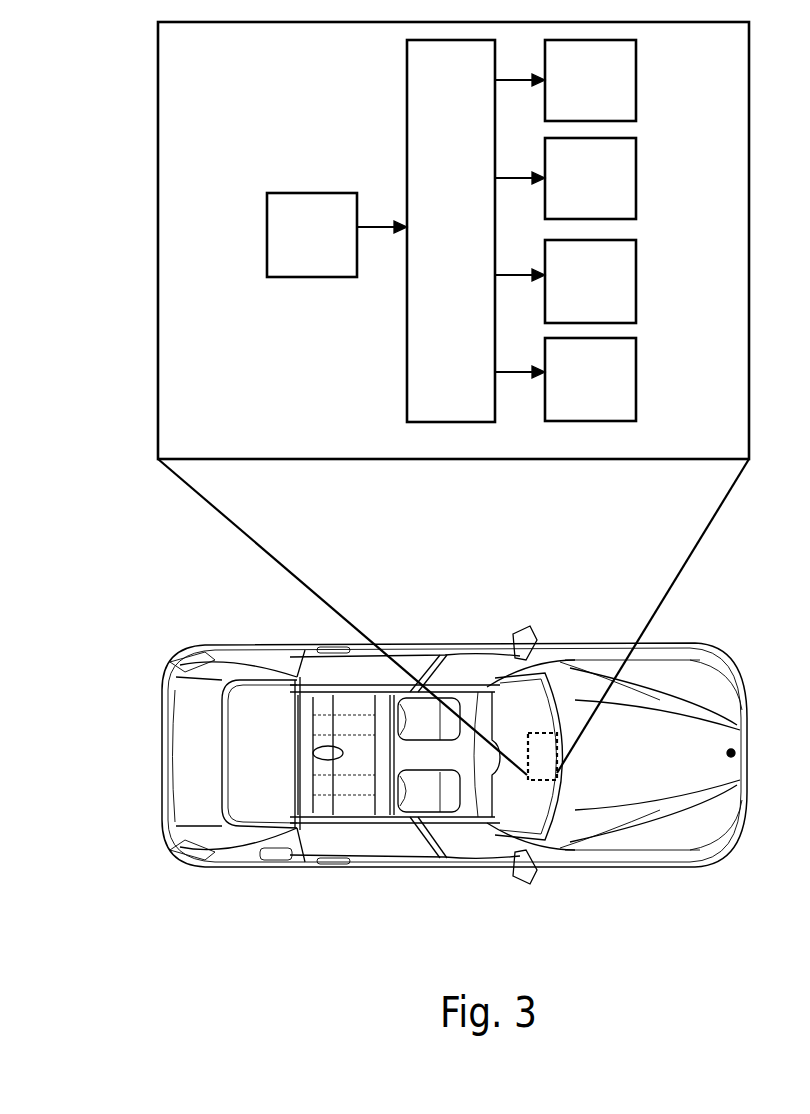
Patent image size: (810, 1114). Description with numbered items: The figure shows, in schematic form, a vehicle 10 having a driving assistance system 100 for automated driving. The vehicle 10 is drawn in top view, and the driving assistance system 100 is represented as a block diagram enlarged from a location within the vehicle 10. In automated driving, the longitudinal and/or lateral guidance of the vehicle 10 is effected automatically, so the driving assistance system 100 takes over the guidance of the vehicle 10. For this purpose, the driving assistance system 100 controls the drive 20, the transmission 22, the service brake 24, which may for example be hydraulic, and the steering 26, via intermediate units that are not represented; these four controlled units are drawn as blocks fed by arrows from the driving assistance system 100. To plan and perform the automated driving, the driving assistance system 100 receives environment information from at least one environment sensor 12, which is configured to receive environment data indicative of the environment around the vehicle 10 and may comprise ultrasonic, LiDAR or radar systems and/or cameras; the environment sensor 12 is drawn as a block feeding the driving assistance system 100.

The vehicle 10 is at (136, 658).
The environment sensor 12 is at (295, 253).
The driving assistance system 100 is at (480, 250).
The drive 20 is at (573, 108).
The transmission 22 is at (573, 210).
The service brake 24 is at (573, 311).
The steering 26 is at (573, 409).